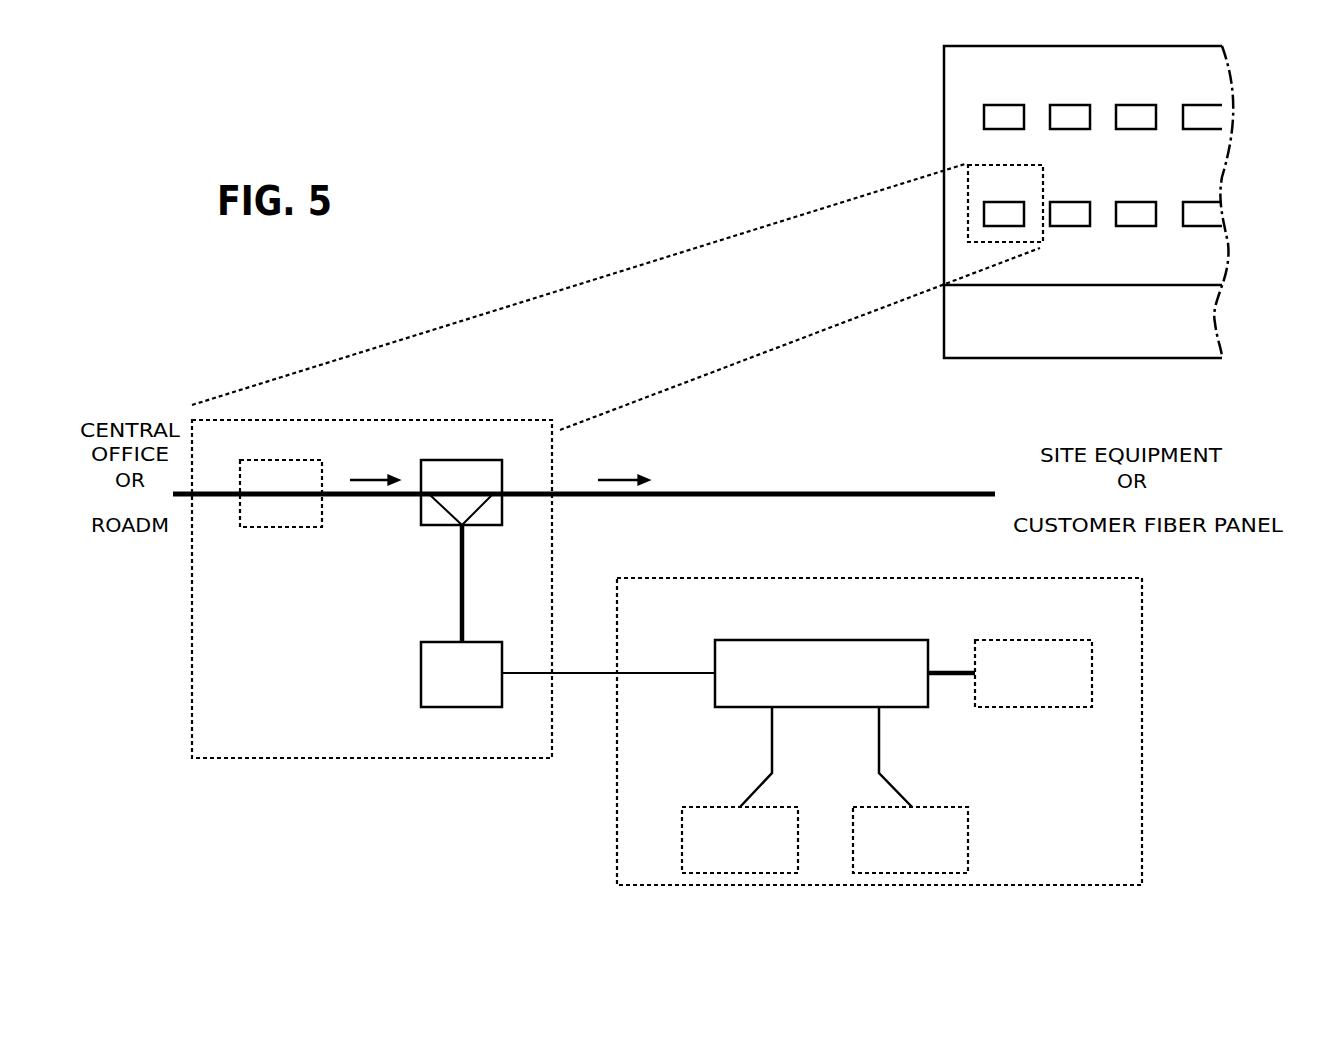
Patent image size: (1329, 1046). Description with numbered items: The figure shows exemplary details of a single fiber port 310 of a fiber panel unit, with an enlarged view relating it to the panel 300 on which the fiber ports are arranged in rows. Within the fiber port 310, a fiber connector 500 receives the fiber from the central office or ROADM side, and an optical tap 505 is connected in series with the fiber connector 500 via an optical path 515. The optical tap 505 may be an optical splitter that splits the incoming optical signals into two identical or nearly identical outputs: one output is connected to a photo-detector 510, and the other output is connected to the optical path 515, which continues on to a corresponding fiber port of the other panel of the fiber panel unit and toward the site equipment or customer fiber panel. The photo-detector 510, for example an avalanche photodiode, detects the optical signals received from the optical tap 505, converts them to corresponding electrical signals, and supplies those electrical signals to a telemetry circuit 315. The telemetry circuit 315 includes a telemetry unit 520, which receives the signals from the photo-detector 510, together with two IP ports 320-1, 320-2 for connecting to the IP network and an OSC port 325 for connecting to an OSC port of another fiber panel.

The panel 300 is at (928, 71).
The fiber port 310 is at (371, 408).
The telemetry circuit 315 is at (868, 566).
The IP port 320-1 is at (684, 807).
The IP port 320-2 is at (960, 798).
The OSC port 325 is at (1090, 640).
The fiber connector 500 is at (285, 527).
The optical tap 505 is at (503, 527).
The photo-detector 510 is at (421, 676).
The optical path 515 is at (765, 478).
The telemetry unit 520 is at (825, 640).